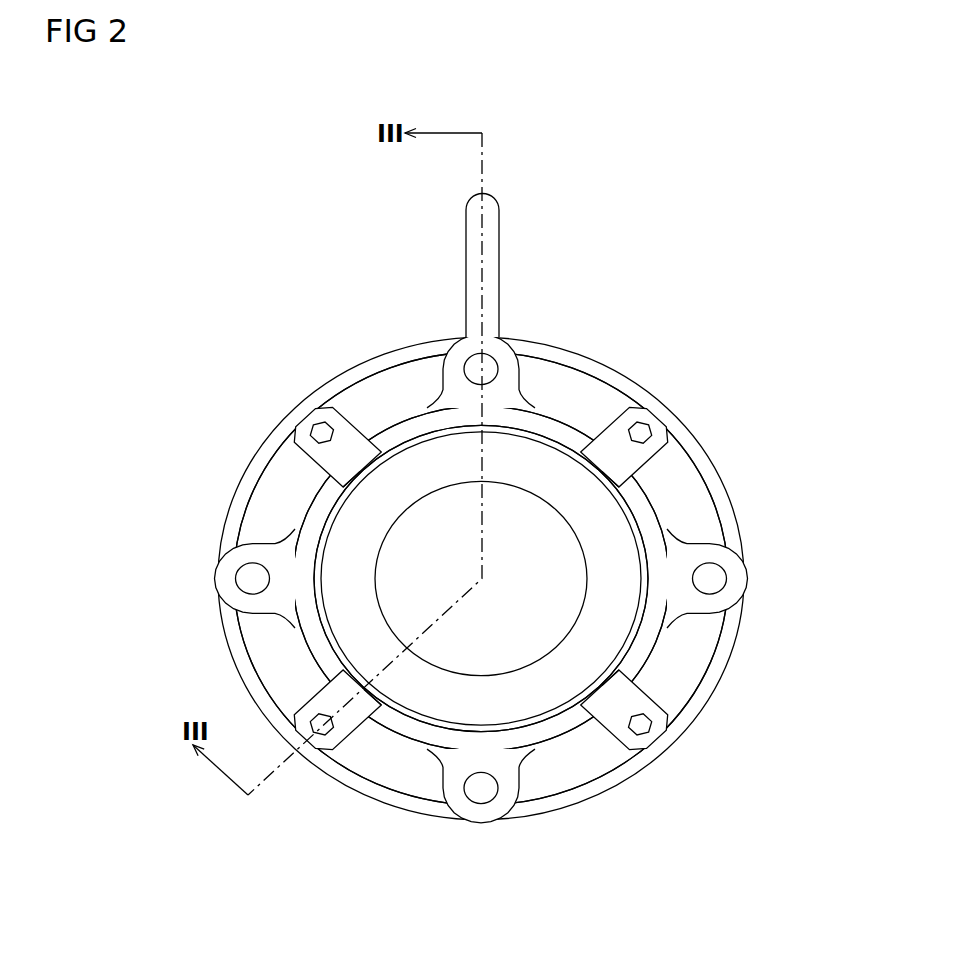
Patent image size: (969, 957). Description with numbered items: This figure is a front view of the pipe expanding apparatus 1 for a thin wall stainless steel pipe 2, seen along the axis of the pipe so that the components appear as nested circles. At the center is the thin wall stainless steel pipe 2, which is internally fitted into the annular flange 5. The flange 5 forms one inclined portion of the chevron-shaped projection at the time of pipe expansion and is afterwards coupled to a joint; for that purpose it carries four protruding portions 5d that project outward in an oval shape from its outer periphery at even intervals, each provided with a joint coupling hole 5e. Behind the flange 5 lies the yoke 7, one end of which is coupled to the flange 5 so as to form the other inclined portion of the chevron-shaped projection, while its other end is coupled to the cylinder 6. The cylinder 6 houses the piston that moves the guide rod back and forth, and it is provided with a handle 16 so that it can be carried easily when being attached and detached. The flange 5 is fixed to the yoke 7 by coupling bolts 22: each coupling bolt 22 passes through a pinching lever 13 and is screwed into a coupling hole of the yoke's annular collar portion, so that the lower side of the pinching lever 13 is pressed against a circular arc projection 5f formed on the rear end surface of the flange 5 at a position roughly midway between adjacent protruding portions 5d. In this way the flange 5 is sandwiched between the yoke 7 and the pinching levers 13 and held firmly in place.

The fluid coupling assembly 1 is at (479, 519).
The thin wall stainless steel pipe 2 is at (403, 443).
The flange 5 is at (650, 638).
The protruding portions 5d is at (503, 352).
The joint coupling hole 5e is at (476, 363).
The circular arc projection 5f is at (340, 490).
The cylinder 6 is at (554, 345).
The yoke 7 is at (573, 396).
The pinching lever 13 is at (332, 412).
The handle 16 is at (500, 247).
The coupling bolt 22 is at (318, 430).